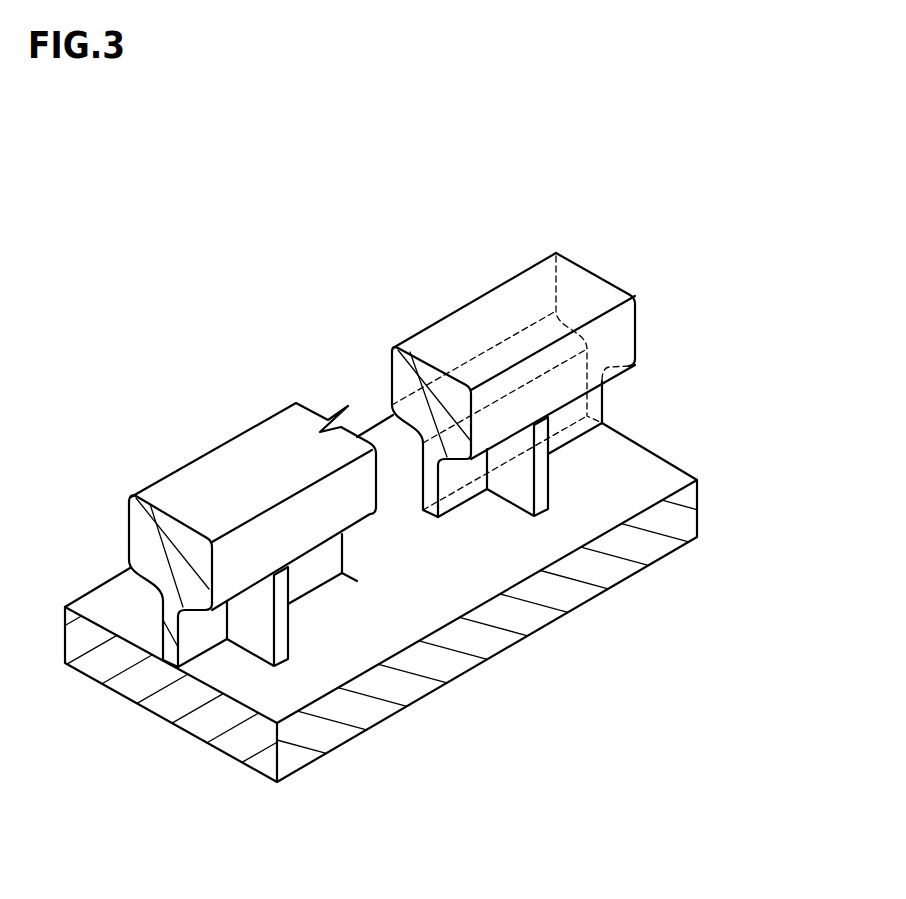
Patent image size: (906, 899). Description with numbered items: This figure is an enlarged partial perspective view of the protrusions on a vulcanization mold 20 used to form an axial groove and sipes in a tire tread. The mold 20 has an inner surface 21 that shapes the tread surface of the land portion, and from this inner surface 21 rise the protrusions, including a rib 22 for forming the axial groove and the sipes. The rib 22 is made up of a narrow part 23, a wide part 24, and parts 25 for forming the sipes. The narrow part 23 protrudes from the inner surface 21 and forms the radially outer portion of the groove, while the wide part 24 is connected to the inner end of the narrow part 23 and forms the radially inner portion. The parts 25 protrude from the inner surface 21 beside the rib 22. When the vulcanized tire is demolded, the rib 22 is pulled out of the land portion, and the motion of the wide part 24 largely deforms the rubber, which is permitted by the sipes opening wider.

The mold 20 is at (290, 313).
The inner surface 21 is at (642, 480).
The rib 22 is at (573, 280).
The narrow part 23 is at (165, 647).
The wide part 24 is at (203, 535).
The parts for forming the sipes 25 is at (540, 468).